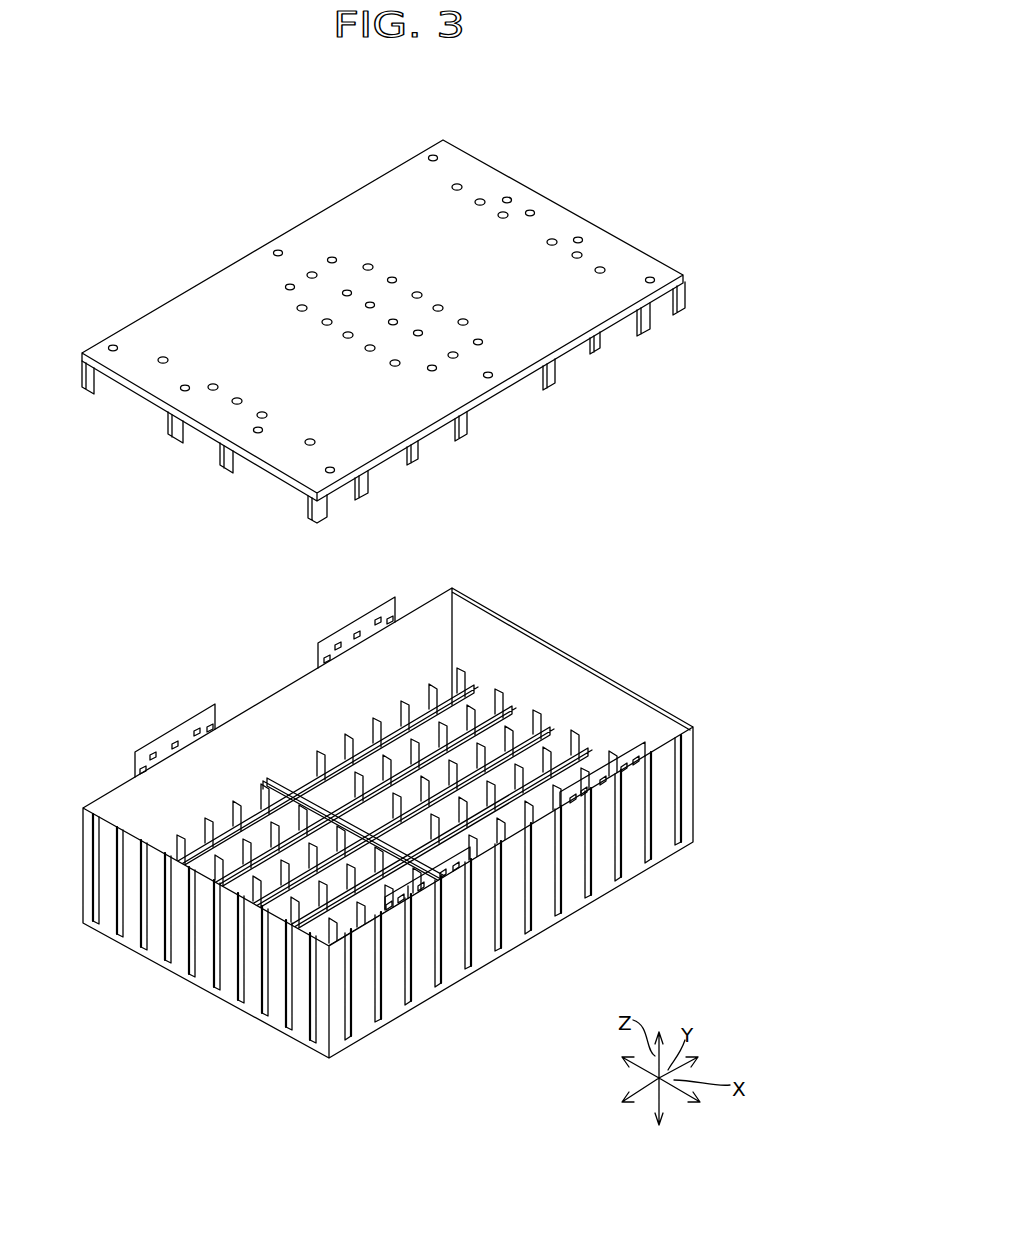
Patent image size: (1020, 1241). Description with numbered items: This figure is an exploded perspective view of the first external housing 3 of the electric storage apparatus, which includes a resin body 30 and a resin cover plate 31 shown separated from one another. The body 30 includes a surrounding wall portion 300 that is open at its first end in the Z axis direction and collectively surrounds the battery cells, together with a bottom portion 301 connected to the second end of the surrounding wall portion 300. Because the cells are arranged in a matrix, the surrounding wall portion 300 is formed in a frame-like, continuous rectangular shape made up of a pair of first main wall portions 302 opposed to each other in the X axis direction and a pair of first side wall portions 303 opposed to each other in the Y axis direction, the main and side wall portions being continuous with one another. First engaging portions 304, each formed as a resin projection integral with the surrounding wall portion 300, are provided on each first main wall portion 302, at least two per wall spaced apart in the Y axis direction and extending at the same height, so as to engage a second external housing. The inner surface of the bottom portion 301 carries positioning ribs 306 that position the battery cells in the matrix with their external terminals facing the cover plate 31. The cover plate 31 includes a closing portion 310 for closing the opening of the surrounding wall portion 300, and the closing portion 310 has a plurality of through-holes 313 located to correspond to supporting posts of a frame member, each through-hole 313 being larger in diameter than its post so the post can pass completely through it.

The first external housing 3 is at (818, 418).
The body 30 is at (713, 677).
The cover plate 31 is at (667, 367).
The surrounding wall portion 300 is at (607, 663).
The bottom portion 301 is at (500, 710).
The first main wall portion 302 is at (297, 700).
The first side wall portion 303 is at (510, 660).
The first engaging portion 304 is at (612, 790).
The positioning rib 306 is at (449, 688).
The closing portion 310 is at (196, 315).
The through-hole 313 is at (503, 212).